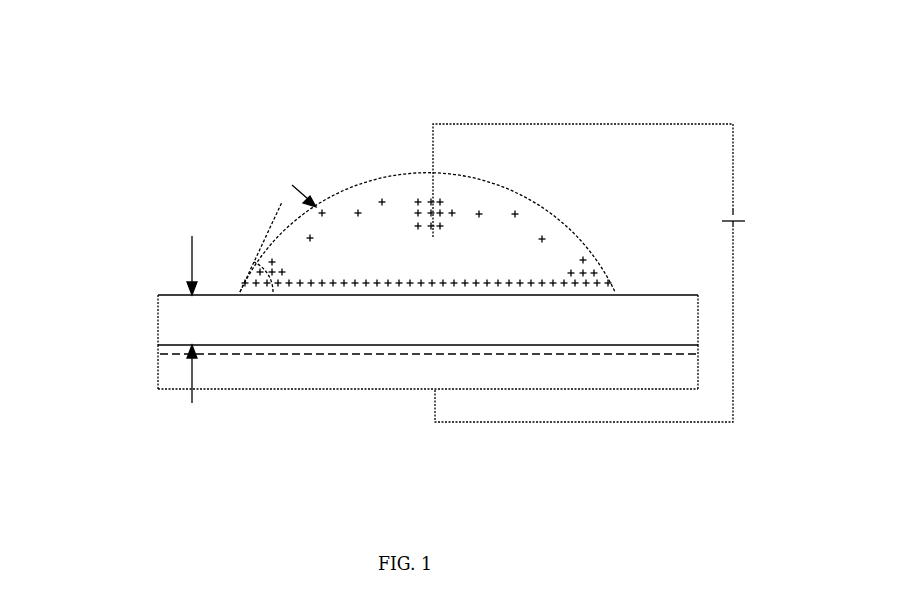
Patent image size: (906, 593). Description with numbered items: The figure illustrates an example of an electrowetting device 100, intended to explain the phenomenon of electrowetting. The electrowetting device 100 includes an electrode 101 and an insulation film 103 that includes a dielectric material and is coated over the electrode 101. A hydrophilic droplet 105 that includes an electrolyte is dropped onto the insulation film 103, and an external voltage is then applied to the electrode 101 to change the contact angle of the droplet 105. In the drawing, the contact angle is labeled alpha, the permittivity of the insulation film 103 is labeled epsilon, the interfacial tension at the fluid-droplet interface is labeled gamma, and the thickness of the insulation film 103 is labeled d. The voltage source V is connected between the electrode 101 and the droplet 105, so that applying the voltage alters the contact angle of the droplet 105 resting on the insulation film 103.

The electrowetting device 100 is at (544, 22).
The electrode 101 is at (225, 380).
The insulation film 103 is at (168, 322).
The hydrophilic droplet 105 is at (383, 200).